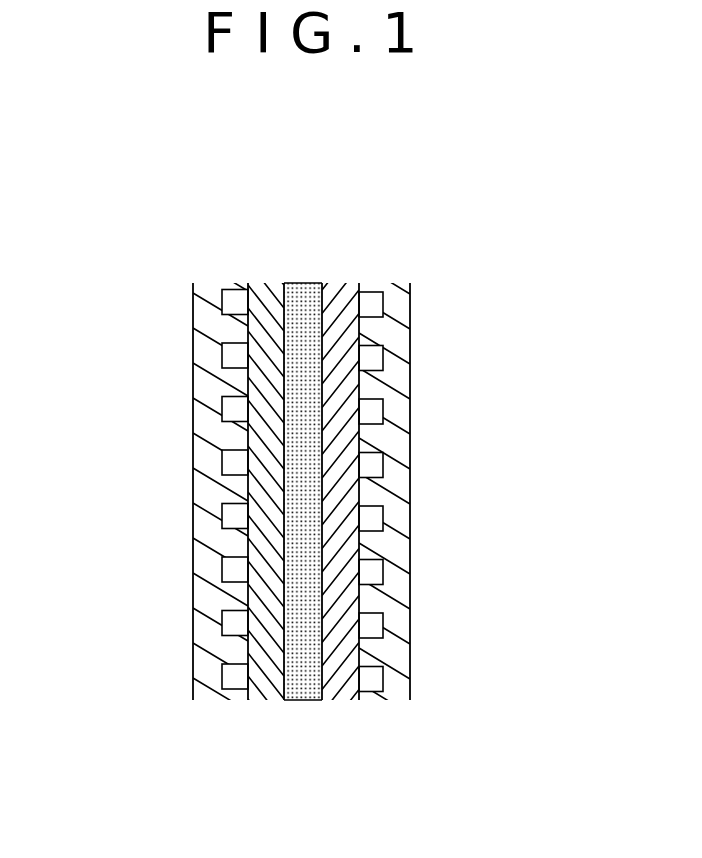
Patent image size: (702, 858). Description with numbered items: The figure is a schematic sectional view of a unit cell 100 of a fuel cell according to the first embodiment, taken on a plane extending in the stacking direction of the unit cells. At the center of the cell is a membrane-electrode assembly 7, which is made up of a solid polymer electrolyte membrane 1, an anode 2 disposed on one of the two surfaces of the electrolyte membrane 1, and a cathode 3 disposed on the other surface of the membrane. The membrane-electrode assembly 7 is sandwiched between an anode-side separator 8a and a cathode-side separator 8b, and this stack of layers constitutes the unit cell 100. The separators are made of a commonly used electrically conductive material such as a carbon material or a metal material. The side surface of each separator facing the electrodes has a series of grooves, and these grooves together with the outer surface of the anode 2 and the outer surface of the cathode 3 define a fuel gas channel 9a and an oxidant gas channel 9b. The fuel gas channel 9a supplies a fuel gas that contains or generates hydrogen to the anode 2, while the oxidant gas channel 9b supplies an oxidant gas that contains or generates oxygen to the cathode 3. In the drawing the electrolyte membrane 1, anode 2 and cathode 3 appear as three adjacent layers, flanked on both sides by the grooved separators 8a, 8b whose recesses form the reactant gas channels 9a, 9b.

The unit cell 100 is at (301, 258).
The solid polymer electrolyte membrane 1 is at (307, 700).
The anode 2 is at (340, 700).
The cathode 3 is at (276, 700).
The membrane-electrode assembly 7 is at (352, 791).
The anode-side separator 8a is at (378, 605).
The cathode-side separator 8b is at (232, 648).
The fuel gas channel 9a is at (372, 473).
The oxidant gas channel 9b is at (221, 518).